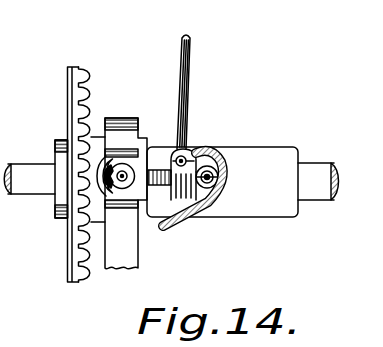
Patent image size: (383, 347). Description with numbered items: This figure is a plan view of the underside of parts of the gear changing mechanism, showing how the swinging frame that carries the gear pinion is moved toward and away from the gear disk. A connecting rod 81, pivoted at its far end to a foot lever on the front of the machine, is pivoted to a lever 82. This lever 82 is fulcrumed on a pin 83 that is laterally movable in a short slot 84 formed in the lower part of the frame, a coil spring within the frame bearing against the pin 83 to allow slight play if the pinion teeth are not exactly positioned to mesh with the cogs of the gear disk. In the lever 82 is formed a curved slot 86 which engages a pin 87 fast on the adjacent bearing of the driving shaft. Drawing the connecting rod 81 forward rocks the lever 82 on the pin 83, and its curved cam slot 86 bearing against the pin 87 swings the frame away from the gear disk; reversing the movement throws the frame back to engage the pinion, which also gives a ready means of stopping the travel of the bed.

The connecting rod 81 is at (191, 100).
The lever 82 is at (215, 190).
The pin 83 is at (127, 157).
The short slot 84 is at (95, 186).
The curved slot 86 is at (195, 232).
The pin 87 is at (220, 172).